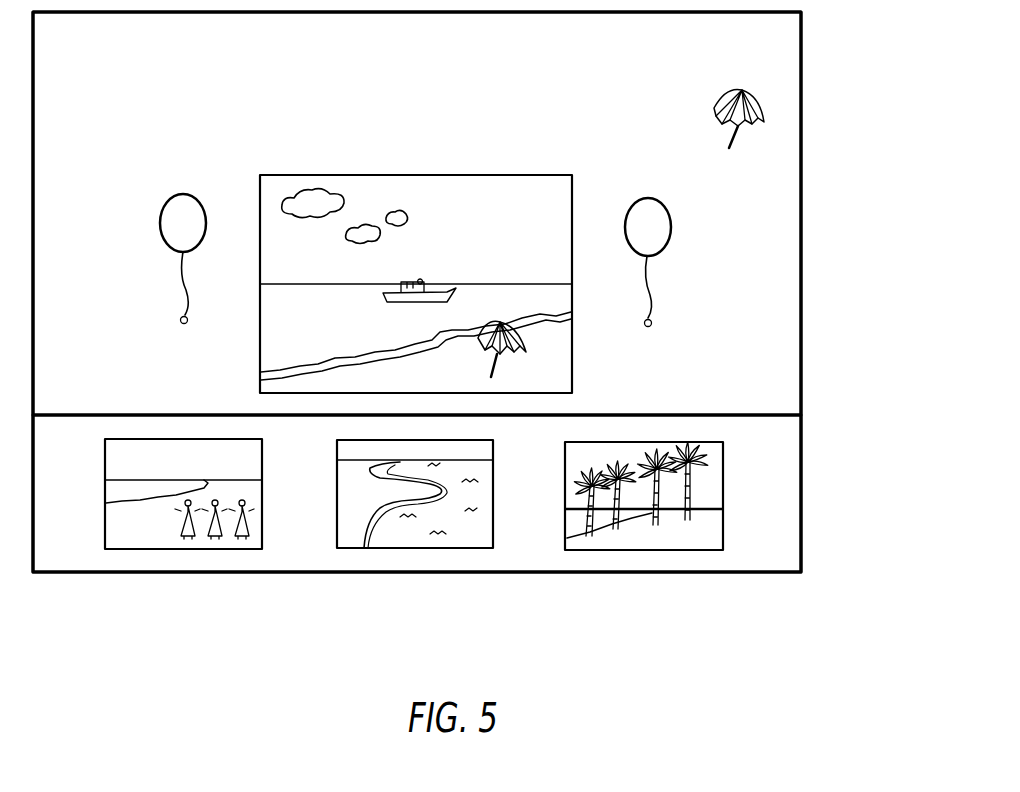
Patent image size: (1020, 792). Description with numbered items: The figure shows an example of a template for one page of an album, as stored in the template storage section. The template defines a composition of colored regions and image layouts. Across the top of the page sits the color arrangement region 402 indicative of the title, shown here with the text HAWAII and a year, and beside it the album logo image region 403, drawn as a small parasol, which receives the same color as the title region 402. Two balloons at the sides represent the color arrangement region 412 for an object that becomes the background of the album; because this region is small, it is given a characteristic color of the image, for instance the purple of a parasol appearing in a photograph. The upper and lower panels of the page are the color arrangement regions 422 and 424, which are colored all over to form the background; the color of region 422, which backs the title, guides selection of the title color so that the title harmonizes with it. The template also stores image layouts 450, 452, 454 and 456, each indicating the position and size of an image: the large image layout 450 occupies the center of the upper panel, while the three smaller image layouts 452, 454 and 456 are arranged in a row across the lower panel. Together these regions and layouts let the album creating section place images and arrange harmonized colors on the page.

The color arrangement region for the title 402 is at (678, 78).
The album logo image region 403 is at (742, 93).
The color arrangement region for the background object 412 is at (162, 214).
The color arrangement region 422 is at (794, 328).
The color arrangement region 424 is at (787, 498).
The image layout 450 is at (258, 355).
The image layout 452 is at (183, 549).
The image layout 454 is at (410, 548).
The image layout 456 is at (645, 550).